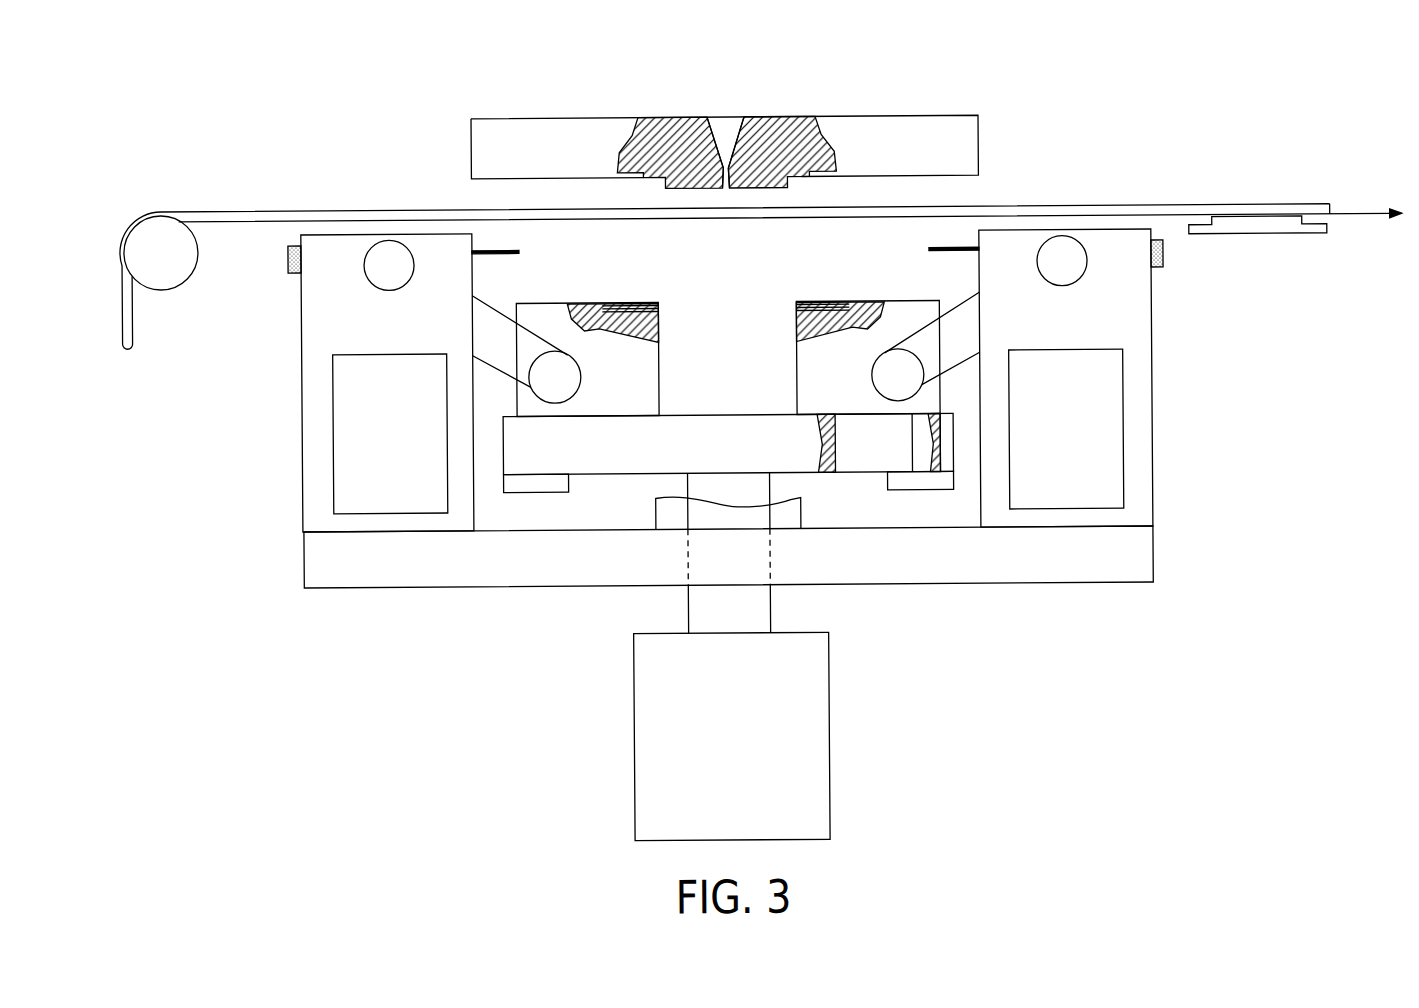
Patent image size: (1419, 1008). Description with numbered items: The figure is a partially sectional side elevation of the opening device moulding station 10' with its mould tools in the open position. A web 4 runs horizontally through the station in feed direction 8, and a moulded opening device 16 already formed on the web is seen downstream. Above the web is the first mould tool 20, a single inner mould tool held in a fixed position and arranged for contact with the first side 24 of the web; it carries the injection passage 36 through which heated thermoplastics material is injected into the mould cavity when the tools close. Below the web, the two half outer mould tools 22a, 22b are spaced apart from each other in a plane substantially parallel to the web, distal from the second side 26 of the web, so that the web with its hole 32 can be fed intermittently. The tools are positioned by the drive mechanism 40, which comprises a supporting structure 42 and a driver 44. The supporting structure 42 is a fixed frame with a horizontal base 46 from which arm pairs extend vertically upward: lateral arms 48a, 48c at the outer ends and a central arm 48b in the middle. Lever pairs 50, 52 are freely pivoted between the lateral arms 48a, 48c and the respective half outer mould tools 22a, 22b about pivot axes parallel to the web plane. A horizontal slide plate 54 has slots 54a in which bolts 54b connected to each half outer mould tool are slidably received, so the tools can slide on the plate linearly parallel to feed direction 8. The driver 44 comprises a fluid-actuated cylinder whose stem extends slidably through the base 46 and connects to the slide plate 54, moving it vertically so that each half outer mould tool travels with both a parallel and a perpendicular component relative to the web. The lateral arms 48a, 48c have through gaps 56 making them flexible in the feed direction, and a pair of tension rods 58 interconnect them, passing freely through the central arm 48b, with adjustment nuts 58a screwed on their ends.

The opening device moulding station 10' is at (229, 63).
The first mould tool 20 is at (907, 127).
The injection passage 36 is at (728, 128).
The web 4 is at (210, 213).
The first side of web 24 is at (317, 203).
The feed direction 8 is at (1355, 220).
The second side of web 26 is at (230, 234).
The moulded opening device 16 is at (1265, 236).
The lateral arm 48c is at (328, 343).
The lateral arm 48a is at (1125, 330).
The through gap 56 is at (355, 467).
The tension rod 58 is at (495, 250).
The adjustment nut 58a is at (288, 265).
The lever pair 52 is at (490, 331).
The lever pair 50 is at (977, 331).
The half outer mould tool 22b is at (540, 310).
The half outer mould tool 22a is at (915, 310).
The hole 32 is at (711, 233).
The slide plate 54 is at (626, 465).
The slot 54a is at (860, 462).
The bolt 54b is at (535, 497).
The central arm 48b is at (678, 515).
The horizontal base 46 is at (437, 567).
The supporting structure 42 is at (1168, 553).
The drive mechanism 40 is at (1084, 604).
The driver 44 is at (843, 752).